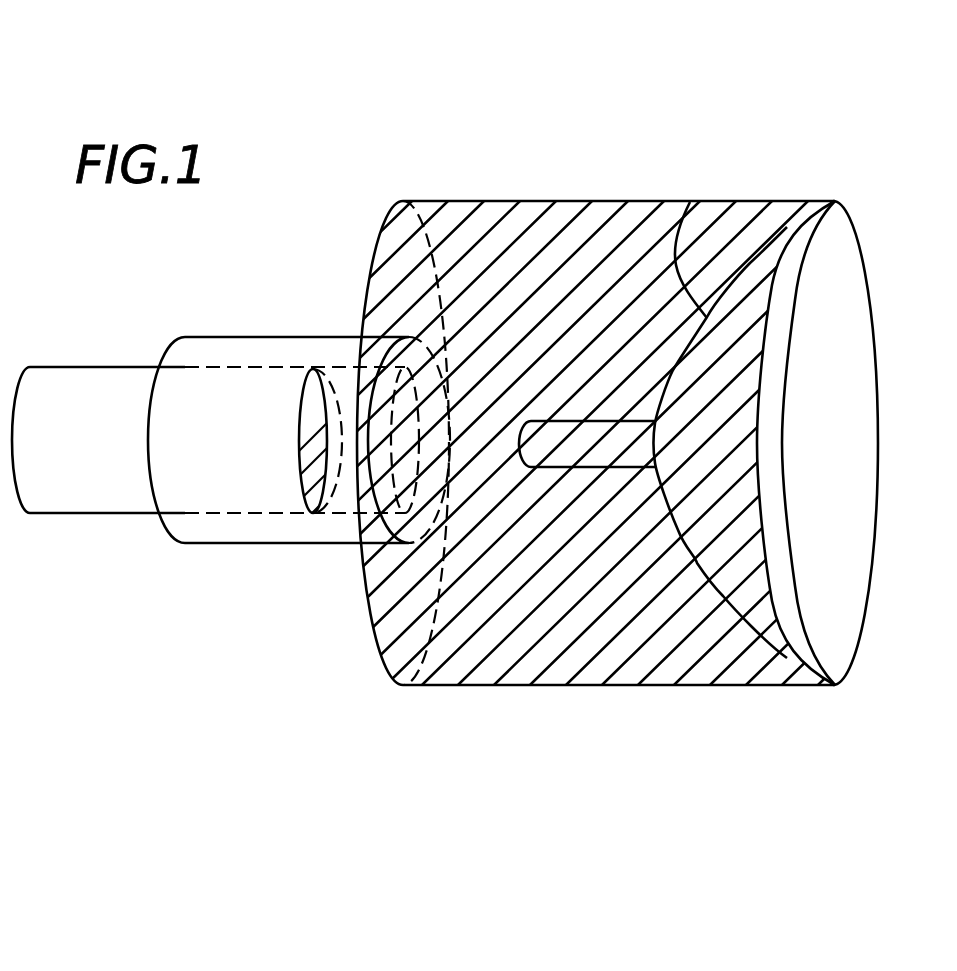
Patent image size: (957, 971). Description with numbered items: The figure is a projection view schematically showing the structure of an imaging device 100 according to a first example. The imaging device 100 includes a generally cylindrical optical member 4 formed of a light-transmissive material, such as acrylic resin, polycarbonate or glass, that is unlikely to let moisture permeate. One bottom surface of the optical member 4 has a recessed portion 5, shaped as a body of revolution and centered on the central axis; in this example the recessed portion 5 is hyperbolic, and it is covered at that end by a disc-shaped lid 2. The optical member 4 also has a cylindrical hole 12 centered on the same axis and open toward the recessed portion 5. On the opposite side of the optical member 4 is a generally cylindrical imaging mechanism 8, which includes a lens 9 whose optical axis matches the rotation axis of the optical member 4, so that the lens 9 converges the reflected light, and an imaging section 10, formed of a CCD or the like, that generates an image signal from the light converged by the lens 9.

The imaging device 100 is at (817, 120).
The lid 2 is at (810, 687).
The optical member 4 is at (577, 702).
The recessed portion 5 is at (690, 202).
The imaging mechanism 8 is at (292, 590).
The lens 9 is at (303, 483).
The imaging section 10 is at (108, 462).
The cylindrical hole 12 is at (569, 440).